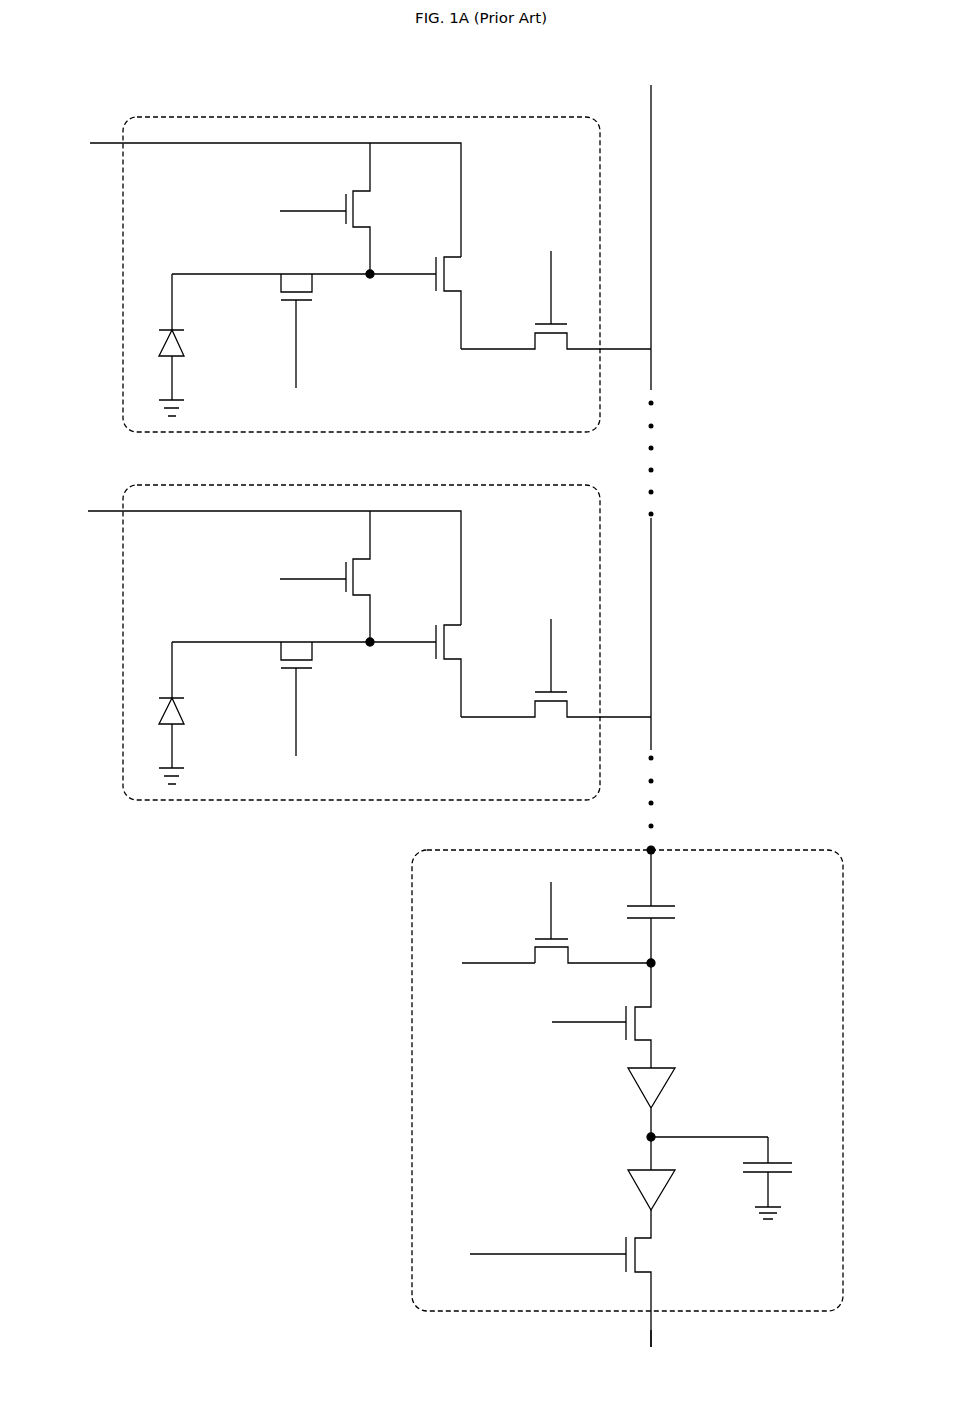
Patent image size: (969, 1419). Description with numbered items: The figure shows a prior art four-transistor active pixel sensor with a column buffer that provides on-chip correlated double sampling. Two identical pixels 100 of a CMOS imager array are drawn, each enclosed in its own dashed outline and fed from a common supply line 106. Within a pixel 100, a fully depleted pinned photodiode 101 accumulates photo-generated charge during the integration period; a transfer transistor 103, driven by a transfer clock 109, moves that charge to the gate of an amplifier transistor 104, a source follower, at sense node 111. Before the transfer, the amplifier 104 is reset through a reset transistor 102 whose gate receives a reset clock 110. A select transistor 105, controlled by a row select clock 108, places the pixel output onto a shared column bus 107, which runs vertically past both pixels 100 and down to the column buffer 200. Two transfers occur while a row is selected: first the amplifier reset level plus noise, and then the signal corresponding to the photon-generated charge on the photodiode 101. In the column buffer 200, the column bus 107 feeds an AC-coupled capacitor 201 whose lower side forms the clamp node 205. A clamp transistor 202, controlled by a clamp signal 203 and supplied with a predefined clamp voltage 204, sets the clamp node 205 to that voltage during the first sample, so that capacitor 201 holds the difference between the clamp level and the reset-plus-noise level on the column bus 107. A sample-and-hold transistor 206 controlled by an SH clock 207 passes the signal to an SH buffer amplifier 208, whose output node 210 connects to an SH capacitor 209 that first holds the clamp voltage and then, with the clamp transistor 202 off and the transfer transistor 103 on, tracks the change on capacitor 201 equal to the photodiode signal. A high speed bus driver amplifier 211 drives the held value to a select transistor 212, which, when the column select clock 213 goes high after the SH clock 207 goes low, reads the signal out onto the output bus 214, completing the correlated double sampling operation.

The pixel 100 is at (362, 117).
The pinned photodiode 101 is at (156, 529).
The reset transistor 102 is at (365, 392).
The transfer transistor 103 is at (296, 470).
The amplifier transistor 104 is at (453, 487).
The select transistor 105 is at (556, 529).
The supply voltage line 106 is at (260, 380).
The column bus 107 is at (660, 485).
The row select clock 108 is at (551, 460).
The transfer clock 109 is at (297, 541).
The reset clock 110 is at (296, 395).
The sense node 111 is at (304, 469).
The column buffer 200 is at (407, 1080).
The AC-coupled capacitor 201 is at (668, 933).
The clamp transistor 202 is at (593, 955).
The clamp signal 203 is at (552, 897).
The clamp voltage 204 is at (481, 963).
The clamp node 205 is at (668, 965).
The sample-and-hold transistor 206 is at (647, 1015).
The SH clock 207 is at (574, 1022).
The SH buffer amplifier 208 is at (665, 1102).
The SH capacitor 209 is at (784, 1178).
The hold node 210 is at (692, 1137).
The high speed bus driver amplifier 211 is at (639, 1173).
The select transistor 212 is at (647, 1278).
The column select clock 213 is at (530, 1254).
The output bus 214 is at (666, 1340).